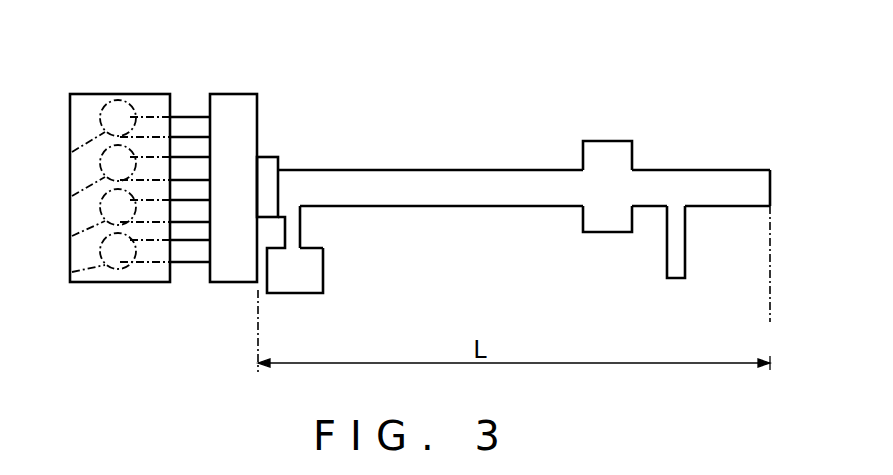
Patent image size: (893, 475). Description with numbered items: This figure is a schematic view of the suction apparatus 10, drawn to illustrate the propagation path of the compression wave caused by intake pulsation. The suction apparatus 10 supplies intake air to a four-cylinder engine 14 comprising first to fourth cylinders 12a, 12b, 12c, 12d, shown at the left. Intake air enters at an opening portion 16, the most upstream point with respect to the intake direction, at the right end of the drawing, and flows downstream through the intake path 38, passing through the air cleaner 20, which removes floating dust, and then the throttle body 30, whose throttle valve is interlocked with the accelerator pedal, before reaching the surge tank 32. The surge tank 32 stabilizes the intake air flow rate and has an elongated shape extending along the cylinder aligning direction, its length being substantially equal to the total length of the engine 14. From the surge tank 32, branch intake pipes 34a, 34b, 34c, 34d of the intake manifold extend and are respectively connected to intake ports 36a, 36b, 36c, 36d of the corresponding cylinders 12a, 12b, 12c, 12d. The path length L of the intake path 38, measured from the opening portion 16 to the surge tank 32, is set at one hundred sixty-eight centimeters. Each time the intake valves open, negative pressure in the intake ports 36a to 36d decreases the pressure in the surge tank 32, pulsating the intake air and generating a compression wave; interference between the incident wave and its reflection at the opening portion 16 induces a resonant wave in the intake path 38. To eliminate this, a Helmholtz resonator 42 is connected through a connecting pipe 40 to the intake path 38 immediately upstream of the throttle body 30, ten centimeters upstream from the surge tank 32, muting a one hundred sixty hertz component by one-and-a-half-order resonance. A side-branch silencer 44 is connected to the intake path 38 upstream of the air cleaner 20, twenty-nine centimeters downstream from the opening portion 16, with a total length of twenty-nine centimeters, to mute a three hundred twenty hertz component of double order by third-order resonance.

The suction apparatus 10 is at (429, 124).
The first cylinder 12a is at (72, 152).
The second cylinder 12b is at (72, 196).
The third cylinder 12c is at (72, 236).
The fourth cylinder 12d is at (72, 272).
The four-cylinder engine 14 is at (95, 77).
The opening portion 16 is at (777, 180).
The air cleaner 20 is at (612, 141).
The throttle body 30 is at (266, 156).
The surge tank 32 is at (243, 94).
The branch intake pipe 34a is at (143, 117).
The branch intake pipe 34b is at (162, 157).
The branch intake pipe 34c is at (164, 258).
The branch intake pipe 34d is at (150, 266).
The intake port 36a is at (185, 113).
The intake port 36b is at (193, 176).
The intake port 36c is at (179, 226).
The intake port 36d is at (202, 262).
The intake path 38 is at (515, 160).
The connecting pipe 40 is at (294, 247).
The Helmholtz resonator 42 is at (319, 282).
The side-branch silencer 44 is at (667, 252).